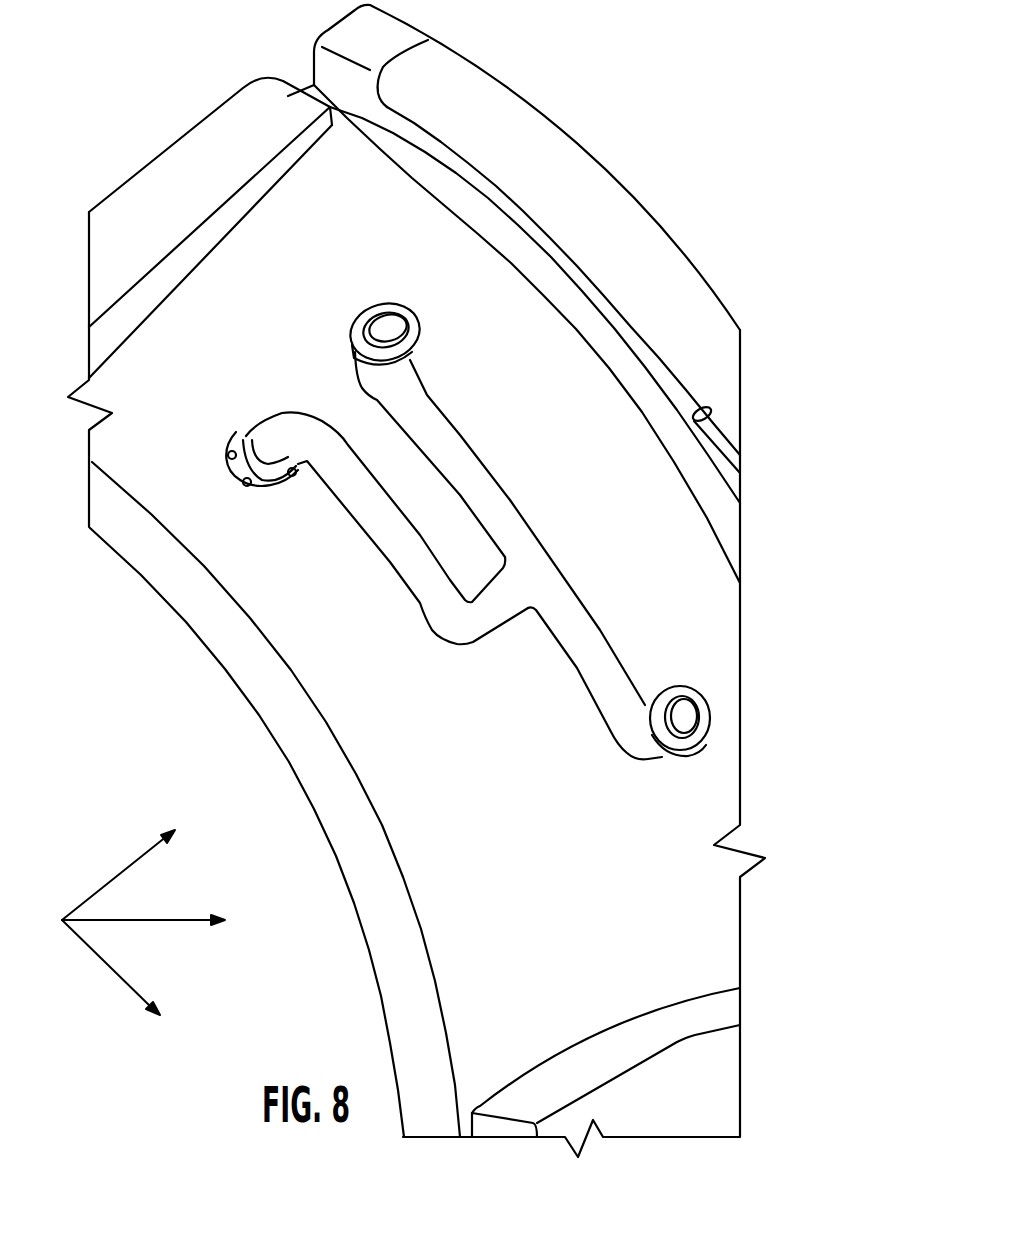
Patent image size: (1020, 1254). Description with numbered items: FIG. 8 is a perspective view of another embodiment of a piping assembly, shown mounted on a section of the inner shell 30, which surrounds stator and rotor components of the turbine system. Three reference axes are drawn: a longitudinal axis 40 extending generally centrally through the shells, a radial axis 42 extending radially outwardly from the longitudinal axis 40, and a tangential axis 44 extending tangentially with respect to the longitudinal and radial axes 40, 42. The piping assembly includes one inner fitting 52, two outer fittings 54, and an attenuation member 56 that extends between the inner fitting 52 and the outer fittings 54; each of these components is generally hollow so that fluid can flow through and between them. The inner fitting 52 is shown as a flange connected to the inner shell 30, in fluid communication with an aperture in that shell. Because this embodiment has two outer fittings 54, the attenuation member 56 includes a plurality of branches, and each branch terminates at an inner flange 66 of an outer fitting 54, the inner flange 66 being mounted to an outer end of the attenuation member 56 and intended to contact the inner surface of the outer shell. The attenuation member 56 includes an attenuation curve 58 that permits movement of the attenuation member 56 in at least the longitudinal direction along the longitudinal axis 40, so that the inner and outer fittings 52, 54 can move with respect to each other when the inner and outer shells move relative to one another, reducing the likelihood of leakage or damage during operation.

The inner shell 30 is at (252, 236).
The longitudinal axis 40 is at (124, 860).
The radial axis 42 is at (170, 918).
The tangential axis 44 is at (122, 990).
The inner fitting 52 is at (255, 508).
The outer fitting 54 is at (363, 290).
The attenuation member 56 is at (532, 467).
The attenuation curve 58 is at (452, 676).
The inner flange 66 is at (405, 313).